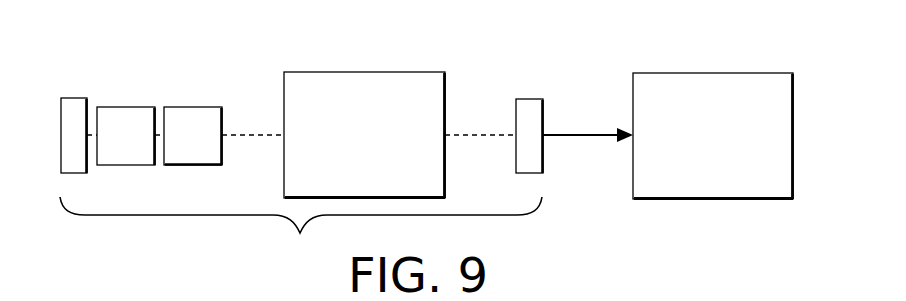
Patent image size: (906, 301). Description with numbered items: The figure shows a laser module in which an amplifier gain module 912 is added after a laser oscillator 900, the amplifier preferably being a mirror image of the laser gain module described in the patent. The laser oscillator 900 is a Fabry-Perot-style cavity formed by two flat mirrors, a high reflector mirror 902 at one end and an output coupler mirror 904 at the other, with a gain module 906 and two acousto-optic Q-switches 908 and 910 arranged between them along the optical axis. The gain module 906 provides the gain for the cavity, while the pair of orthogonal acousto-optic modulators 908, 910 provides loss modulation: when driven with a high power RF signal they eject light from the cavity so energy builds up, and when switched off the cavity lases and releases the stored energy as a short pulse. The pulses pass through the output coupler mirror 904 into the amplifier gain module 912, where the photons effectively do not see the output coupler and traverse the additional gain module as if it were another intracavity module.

The laser oscillator 900 is at (301, 229).
The high reflector mirror 902 is at (72, 98).
The output coupler mirror 904 is at (528, 99).
The gain module 906 is at (363, 72).
The acousto-optic Q-switch 908 is at (122, 107).
The acousto-optic Q-switch 910 is at (188, 107).
The amplifier gain module 912 is at (708, 73).